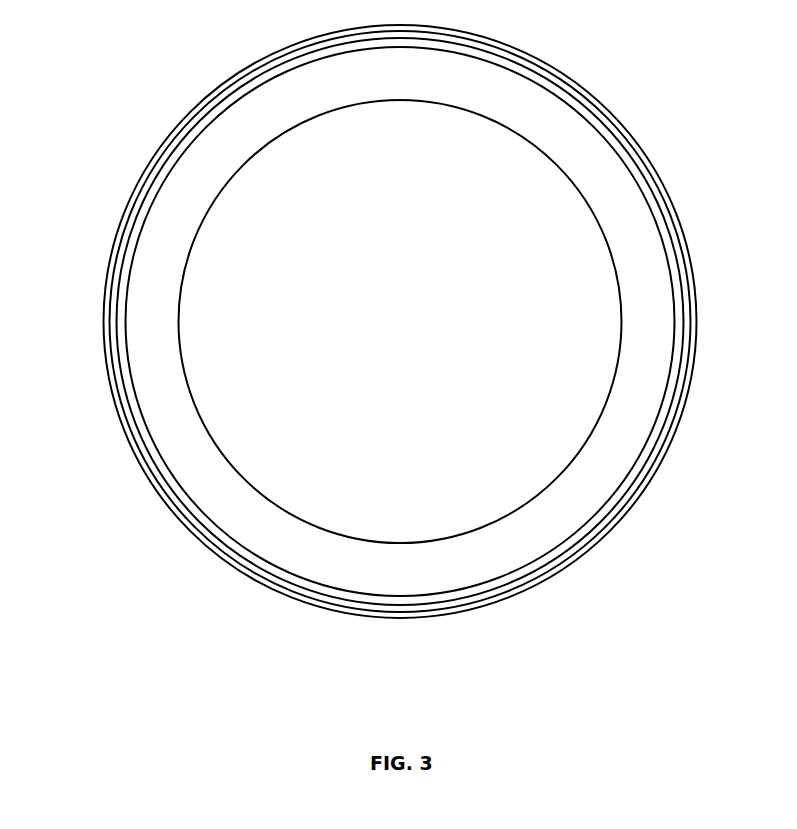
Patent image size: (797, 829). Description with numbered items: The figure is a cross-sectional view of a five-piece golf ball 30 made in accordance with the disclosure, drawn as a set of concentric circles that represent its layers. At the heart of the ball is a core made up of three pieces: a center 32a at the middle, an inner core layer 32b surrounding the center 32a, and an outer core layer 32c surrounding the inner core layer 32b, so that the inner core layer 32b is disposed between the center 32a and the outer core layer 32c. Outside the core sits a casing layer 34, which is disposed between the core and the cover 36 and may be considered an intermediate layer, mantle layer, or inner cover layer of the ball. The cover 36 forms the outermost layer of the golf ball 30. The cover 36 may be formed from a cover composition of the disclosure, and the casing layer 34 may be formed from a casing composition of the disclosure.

The five-piece golf ball 30 is at (114, 139).
The center 32a is at (627, 375).
The inner core layer 32b is at (196, 515).
The outer core layer 32c is at (676, 407).
The casing layer 34 is at (608, 530).
The cover 36 is at (515, 605).